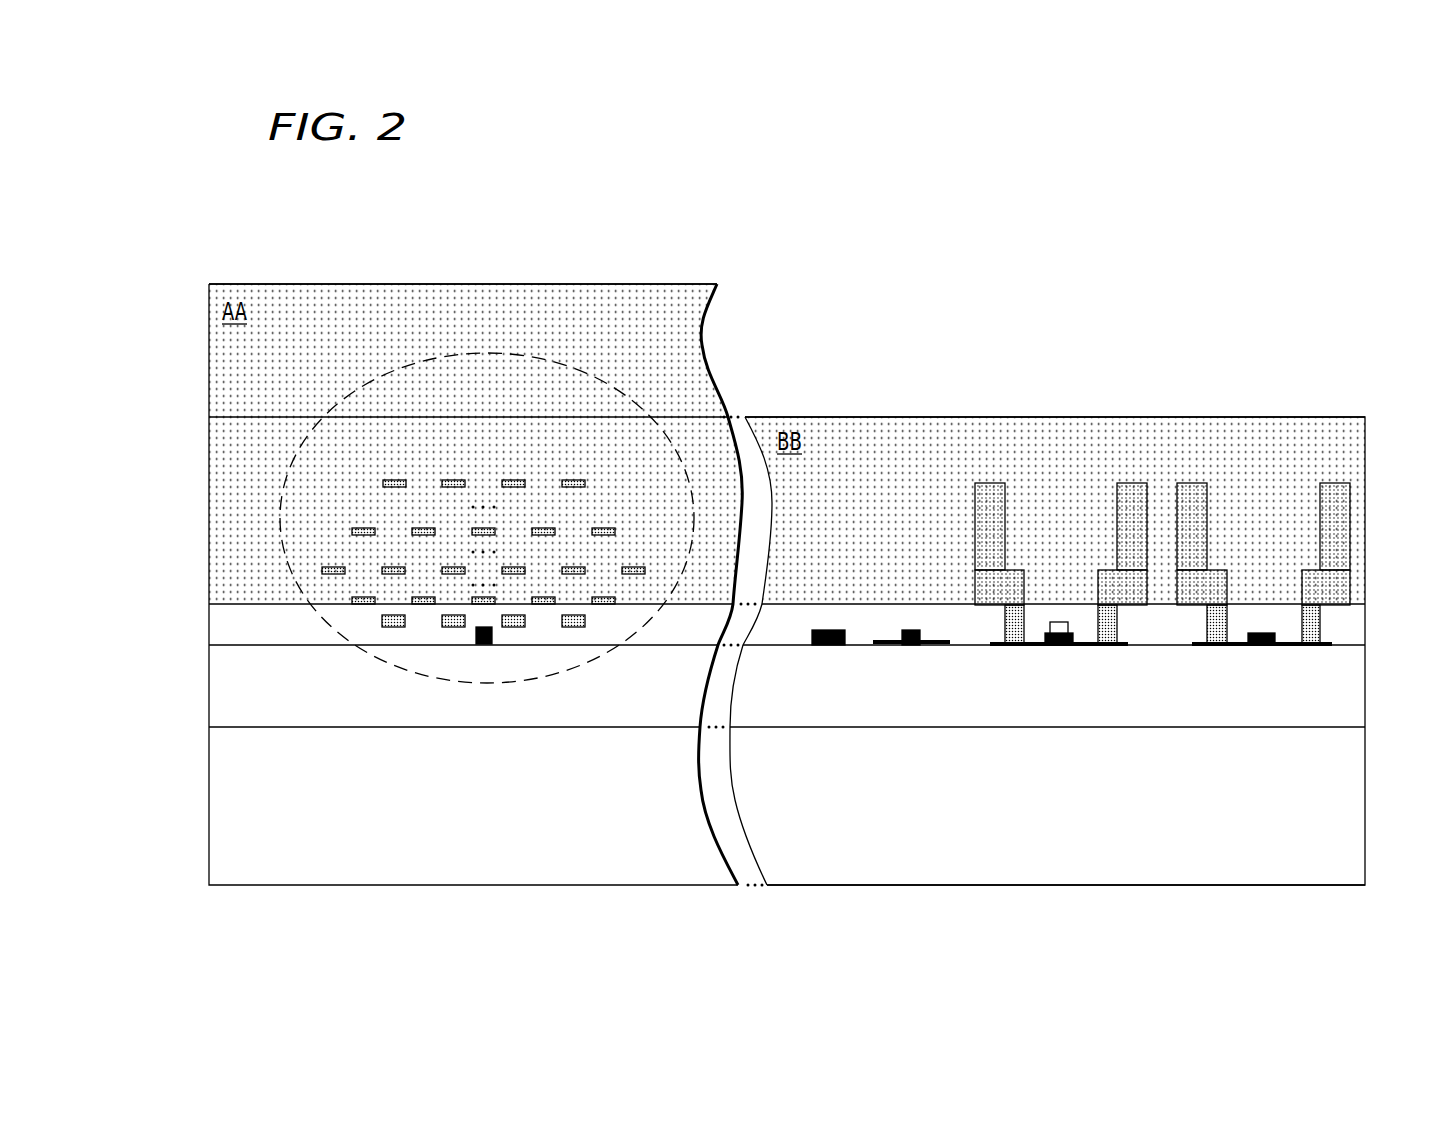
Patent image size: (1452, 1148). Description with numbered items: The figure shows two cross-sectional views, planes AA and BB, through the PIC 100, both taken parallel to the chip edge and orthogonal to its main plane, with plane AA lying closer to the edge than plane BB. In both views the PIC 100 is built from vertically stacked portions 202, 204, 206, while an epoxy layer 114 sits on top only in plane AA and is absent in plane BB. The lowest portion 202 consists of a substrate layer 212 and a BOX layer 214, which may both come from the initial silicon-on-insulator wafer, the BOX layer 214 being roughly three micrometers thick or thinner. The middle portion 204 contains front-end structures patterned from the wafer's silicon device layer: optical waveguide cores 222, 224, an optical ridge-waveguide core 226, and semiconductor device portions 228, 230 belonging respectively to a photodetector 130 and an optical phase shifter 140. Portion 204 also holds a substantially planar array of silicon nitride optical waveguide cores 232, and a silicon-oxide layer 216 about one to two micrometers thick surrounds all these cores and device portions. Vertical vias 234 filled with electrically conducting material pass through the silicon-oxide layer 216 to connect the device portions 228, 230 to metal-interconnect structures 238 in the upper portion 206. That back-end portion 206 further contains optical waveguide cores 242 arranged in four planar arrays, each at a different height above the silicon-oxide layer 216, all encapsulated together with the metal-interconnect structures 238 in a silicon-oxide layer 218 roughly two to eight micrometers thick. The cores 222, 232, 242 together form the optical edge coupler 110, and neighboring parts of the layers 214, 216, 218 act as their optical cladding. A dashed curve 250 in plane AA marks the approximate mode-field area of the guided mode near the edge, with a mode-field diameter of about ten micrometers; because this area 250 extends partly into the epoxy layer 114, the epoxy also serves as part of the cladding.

The PIC 100 is at (356, 189).
The optical edge coupler 110 is at (466, 266).
The epoxy layer 114 is at (209, 350).
The photodetector 130 is at (1060, 464).
The optical phase shifter 140 is at (1265, 464).
The portion 202 is at (203, 645).
The portion 204 is at (203, 604).
The portion 206 is at (203, 417).
The substrate layer 212 is at (1366, 810).
The BOX layer 214 is at (1366, 705).
The silicon-oxide layer 216 is at (1366, 627).
The silicon-oxide layer 218 is at (1366, 443).
The optical waveguide core 222 is at (484, 645).
The optical waveguide core 224 is at (828, 647).
The optical ridge-waveguide core 226 is at (910, 647).
The semiconductor device portion 228 is at (1060, 647).
The semiconductor device portion 230 is at (1261, 668).
The optical waveguide cores 232 is at (387, 627).
The vertical vias 234 is at (1005, 622).
The metal-interconnect structures 238 is at (975, 530).
The optical waveguide cores 242 is at (628, 588).
The dashed curve 250 is at (585, 361).